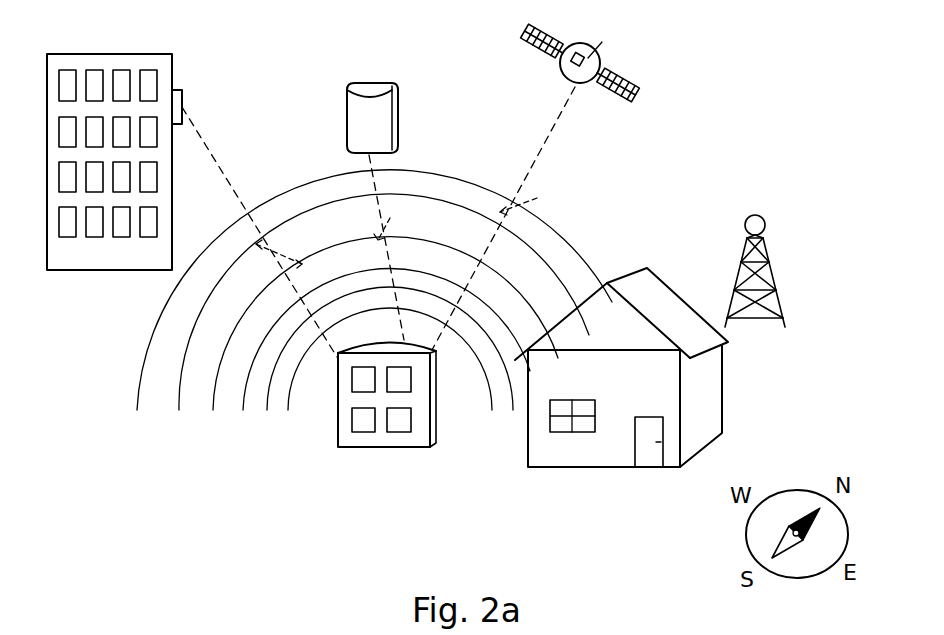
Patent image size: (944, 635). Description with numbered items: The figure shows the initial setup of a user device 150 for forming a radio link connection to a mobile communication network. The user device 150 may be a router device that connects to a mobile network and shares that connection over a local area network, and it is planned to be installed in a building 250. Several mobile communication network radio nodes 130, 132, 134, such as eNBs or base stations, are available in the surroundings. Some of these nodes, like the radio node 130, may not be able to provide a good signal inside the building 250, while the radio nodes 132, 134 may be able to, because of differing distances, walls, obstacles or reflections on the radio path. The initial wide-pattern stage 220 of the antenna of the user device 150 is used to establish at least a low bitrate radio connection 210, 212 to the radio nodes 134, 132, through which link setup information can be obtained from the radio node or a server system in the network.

The mobile communication network radio node 130 is at (765, 216).
The mobile communication network radio node 132 is at (347, 93).
The mobile communication network radio node 134 is at (180, 92).
The user device 150 is at (427, 447).
The low bitrate radio connection 210 is at (225, 162).
The low bitrate radio connection 212 is at (373, 178).
The initial wide-pattern stage of the antenna 220 is at (214, 398).
The building 250 is at (705, 410).